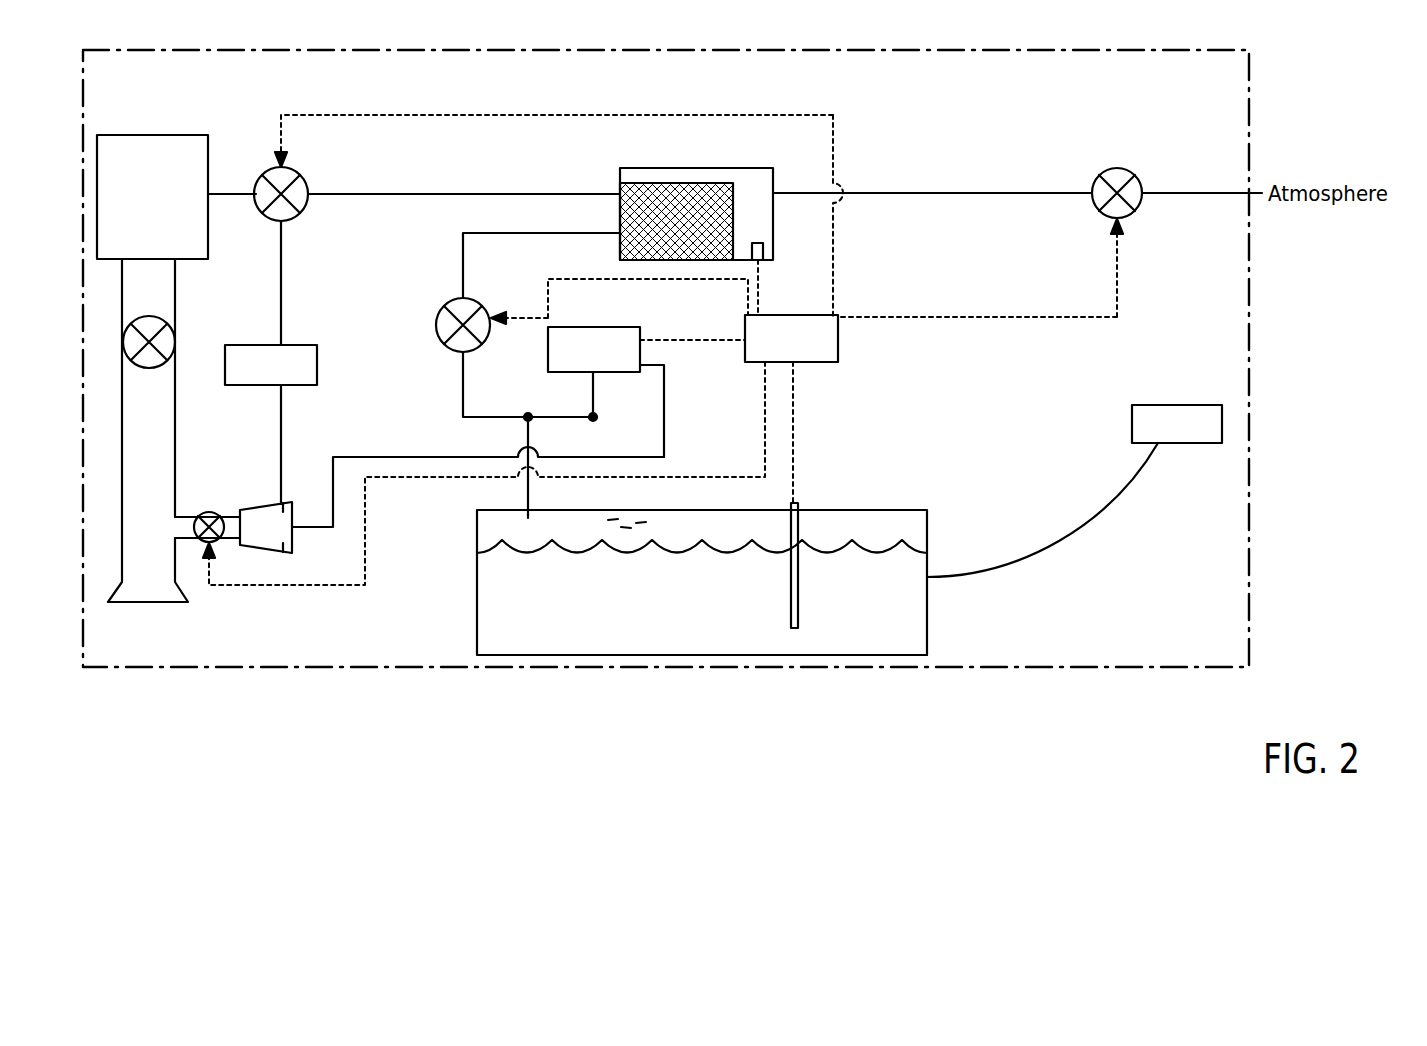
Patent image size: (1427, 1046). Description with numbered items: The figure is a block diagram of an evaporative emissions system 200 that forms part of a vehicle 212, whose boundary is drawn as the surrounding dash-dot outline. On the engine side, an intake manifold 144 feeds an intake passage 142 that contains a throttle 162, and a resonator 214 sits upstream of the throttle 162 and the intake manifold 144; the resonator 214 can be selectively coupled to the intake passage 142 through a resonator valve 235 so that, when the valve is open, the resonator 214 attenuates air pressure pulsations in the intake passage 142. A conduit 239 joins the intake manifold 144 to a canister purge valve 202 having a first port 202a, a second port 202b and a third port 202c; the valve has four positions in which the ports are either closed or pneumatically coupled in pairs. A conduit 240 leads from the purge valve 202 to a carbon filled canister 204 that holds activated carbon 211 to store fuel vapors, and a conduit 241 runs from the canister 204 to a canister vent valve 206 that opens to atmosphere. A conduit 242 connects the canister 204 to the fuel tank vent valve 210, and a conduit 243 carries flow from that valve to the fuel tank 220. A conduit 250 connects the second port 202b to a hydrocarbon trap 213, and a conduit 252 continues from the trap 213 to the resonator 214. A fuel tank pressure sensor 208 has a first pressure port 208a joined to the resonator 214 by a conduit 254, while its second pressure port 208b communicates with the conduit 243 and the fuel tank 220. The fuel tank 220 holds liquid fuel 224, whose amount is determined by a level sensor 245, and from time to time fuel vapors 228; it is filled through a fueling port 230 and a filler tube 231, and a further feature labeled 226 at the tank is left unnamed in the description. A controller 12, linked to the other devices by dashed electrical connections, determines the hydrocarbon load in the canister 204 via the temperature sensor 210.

The controller 12 is at (520, 450).
The intake passage 142 is at (163, 604).
The intake manifold 144 is at (152, 197).
The throttle 162 is at (168, 322).
The evaporative emissions system 200 is at (228, 117).
The canister purge valve 202 is at (303, 178).
The first port 202a is at (254, 185).
The second port 202b is at (285, 222).
The third port 202c is at (310, 196).
The carbon filled canister 204 is at (682, 168).
The canister vent valve 206 is at (1118, 166).
The fuel tank pressure sensor 208 is at (585, 327).
The first pressure port 208a is at (650, 362).
The second pressure port 208b is at (595, 380).
The fuel tank vent valve 210 is at (467, 300).
The activated carbon 211 is at (620, 190).
The vehicle 212 is at (447, 50).
The hydrocarbon trap 213 is at (271, 365).
The resonator 214 is at (285, 553).
The fuel tank 220 is at (927, 520).
The fuel 224 is at (912, 632).
The liquid 226 is at (485, 535).
The fuel vapors 228 is at (650, 521).
The fueling port 230 is at (1177, 424).
The filler tube 231 is at (1093, 525).
The resonator valve 235 is at (203, 513).
The conduit 239 is at (227, 196).
The conduit 240 is at (458, 193).
The conduit 241 is at (945, 193).
The conduit 242 is at (503, 233).
The conduit 243 is at (488, 416).
The level sensor 245 is at (798, 590).
The conduit 250 is at (281, 312).
The conduit 252 is at (281, 430).
The conduit 254 is at (570, 457).